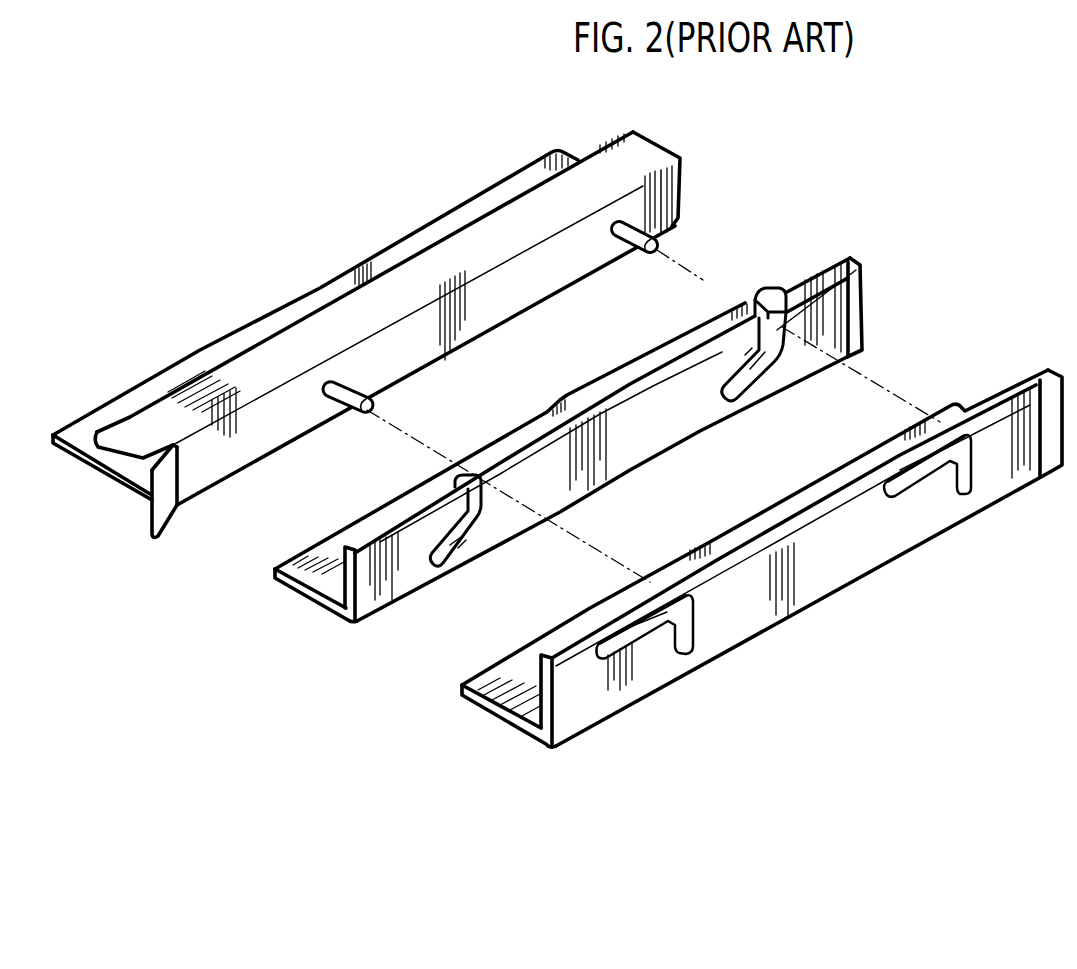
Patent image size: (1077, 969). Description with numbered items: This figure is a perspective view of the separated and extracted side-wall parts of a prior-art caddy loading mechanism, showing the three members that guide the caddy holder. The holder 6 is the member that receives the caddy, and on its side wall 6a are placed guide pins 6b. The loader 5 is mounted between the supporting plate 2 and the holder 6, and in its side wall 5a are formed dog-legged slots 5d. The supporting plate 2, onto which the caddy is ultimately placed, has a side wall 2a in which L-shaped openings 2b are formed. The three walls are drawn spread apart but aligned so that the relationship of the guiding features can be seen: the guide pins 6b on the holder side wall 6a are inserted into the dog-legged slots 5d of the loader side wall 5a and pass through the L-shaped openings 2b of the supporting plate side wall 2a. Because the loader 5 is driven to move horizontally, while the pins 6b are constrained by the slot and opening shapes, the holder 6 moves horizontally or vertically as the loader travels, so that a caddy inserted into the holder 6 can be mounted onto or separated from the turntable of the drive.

The supporting plate 2 is at (516, 727).
The side wall of supporting plate 2a is at (573, 725).
The L-shaped openings 2b is at (632, 640).
The loader 5 is at (316, 597).
The side wall of loader 5a is at (414, 580).
The dog-legged slots 5d is at (783, 292).
The holder 6 is at (110, 477).
The side wall of holder 6a is at (237, 463).
The guide pins 6b is at (345, 403).